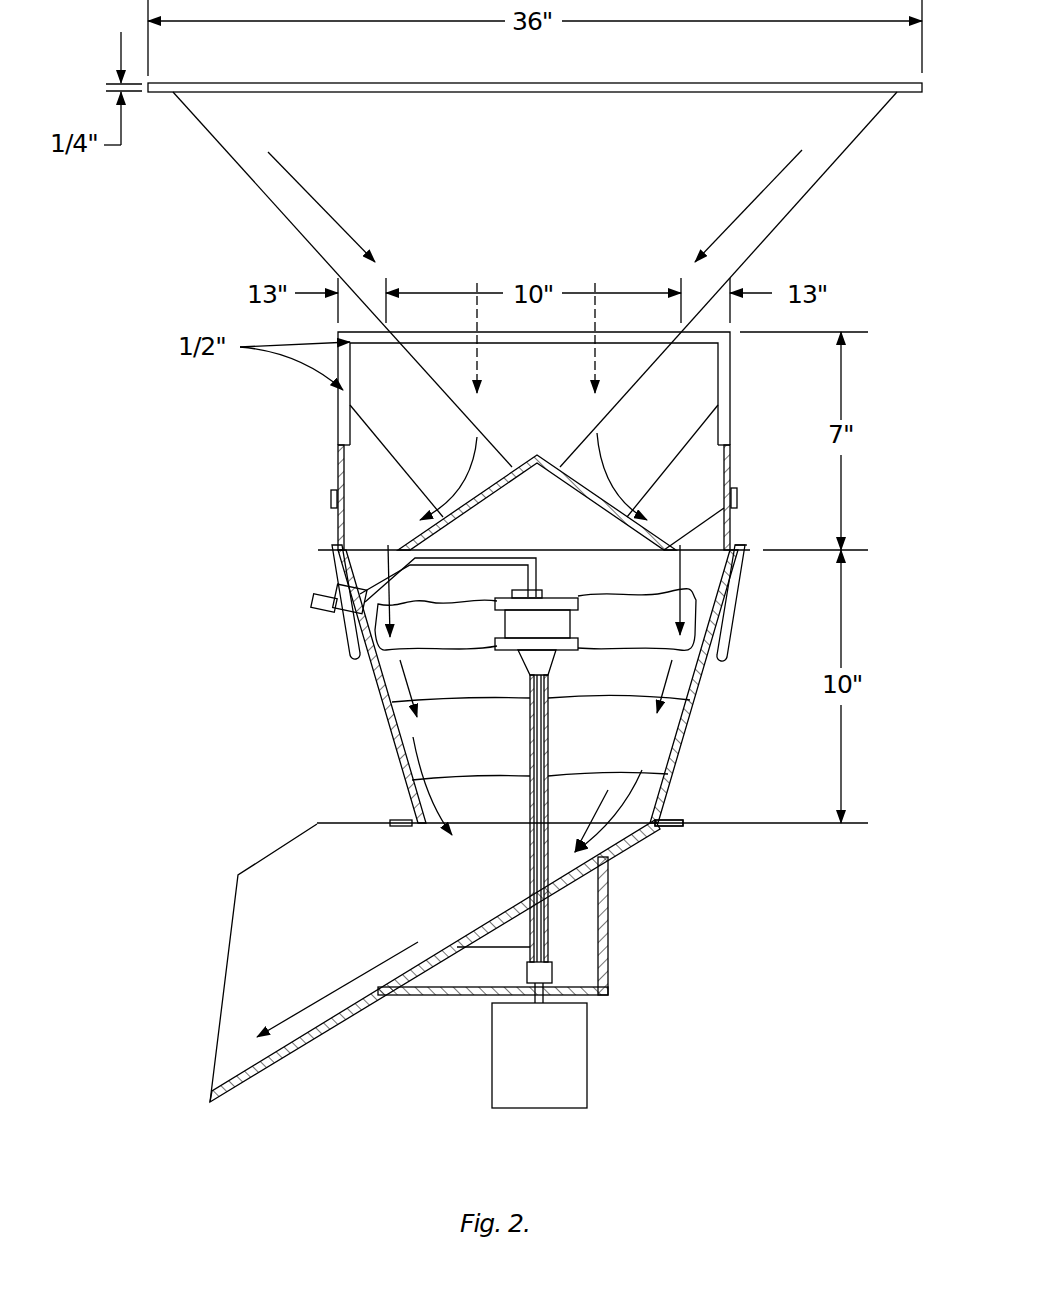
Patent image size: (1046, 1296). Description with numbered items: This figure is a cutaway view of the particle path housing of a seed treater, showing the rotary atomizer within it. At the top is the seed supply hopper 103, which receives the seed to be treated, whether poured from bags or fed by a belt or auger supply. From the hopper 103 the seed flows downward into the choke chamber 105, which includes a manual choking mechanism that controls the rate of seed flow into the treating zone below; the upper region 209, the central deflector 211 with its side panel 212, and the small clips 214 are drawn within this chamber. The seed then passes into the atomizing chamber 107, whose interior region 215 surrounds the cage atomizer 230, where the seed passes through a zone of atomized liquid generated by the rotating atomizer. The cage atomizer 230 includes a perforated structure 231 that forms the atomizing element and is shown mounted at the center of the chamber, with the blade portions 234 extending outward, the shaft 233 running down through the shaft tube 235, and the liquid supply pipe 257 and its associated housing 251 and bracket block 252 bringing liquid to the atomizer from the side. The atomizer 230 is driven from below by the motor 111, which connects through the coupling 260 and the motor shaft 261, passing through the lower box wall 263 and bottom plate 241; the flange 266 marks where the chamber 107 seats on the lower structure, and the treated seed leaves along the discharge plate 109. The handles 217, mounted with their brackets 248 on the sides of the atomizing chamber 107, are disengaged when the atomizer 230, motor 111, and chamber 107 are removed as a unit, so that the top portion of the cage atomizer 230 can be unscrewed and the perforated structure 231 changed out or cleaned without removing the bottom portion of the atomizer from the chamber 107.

The seed supply hopper 103 is at (243, 203).
The choke chamber 105 is at (305, 468).
The atomizing chamber 107 is at (357, 745).
The discharge plate 109 is at (215, 952).
The motor 111 is at (577, 1077).
The upper chamber 209 is at (441, 419).
The deflector chevron 211 is at (532, 452).
The deflector side panel 212 is at (713, 536).
The clip 214 is at (738, 494).
The lower chamber 215 is at (490, 742).
The handles 217 is at (722, 640).
The cage atomizer 230 is at (580, 656).
The perforated structure 231 is at (545, 617).
The shaft 233 is at (540, 915).
The fan blade 234 is at (680, 645).
The shaft tube 235 is at (548, 903).
The bottom plate 241 is at (608, 963).
The rod bracket 248 is at (746, 552).
The pipe housing 251 is at (478, 572).
The bracket block 252 is at (340, 610).
The pipe 257 is at (513, 590).
The coupling 260 is at (552, 973).
The motor shaft 261 is at (543, 997).
The lower box wall 263 is at (608, 882).
The flange 266 is at (668, 818).